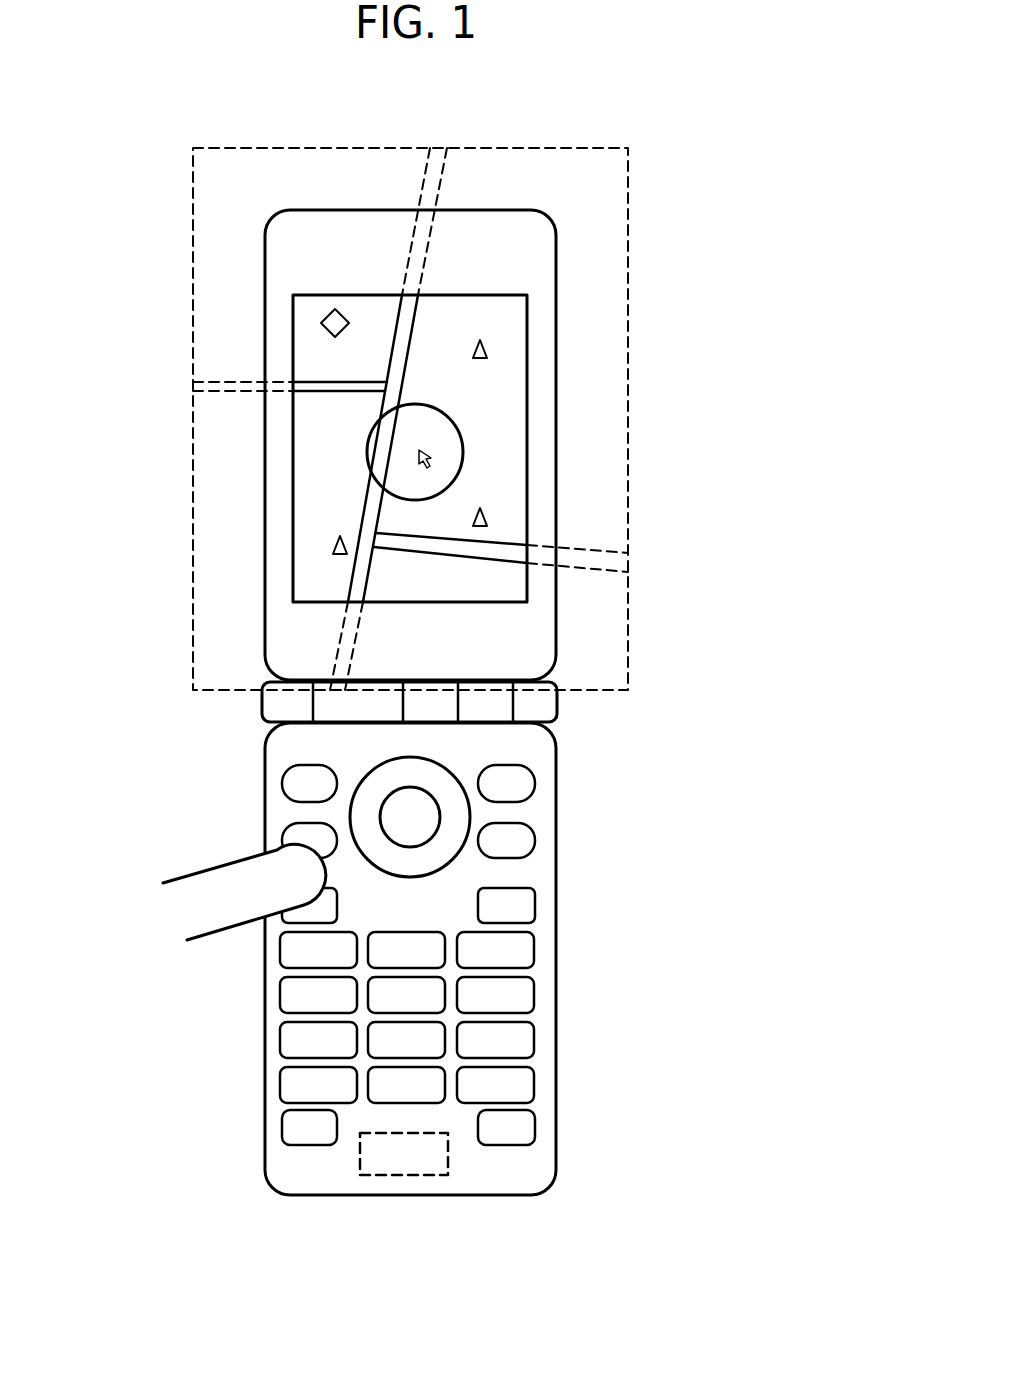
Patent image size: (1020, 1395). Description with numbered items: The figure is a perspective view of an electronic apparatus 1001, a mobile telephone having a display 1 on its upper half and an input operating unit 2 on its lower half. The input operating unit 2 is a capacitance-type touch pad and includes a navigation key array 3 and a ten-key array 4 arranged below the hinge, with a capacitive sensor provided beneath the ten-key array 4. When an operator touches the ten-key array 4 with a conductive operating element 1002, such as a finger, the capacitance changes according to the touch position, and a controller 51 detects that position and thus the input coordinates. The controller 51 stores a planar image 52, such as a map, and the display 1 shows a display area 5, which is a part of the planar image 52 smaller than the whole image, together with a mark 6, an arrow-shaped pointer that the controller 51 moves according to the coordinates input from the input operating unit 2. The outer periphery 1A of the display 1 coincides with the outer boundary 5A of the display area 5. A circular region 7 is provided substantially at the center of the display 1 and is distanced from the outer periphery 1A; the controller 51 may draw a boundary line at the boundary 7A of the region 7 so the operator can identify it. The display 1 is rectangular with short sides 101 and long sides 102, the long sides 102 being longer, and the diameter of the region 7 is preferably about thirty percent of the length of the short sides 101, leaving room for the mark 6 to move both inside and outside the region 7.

The display 1 is at (467, 302).
The outer periphery 1A is at (528, 338).
The input operating unit 2 is at (474, 949).
The navigation key array 3 is at (573, 754).
The ten-key array 4 is at (447, 1015).
The display area 5 is at (510, 418).
The outer boundary 5A is at (528, 379).
The mark 6 is at (432, 457).
The region 7 is at (438, 477).
The boundary 7A is at (362, 447).
The controller 51 is at (428, 1157).
The planar image 52 is at (190, 290).
The short sides 101 is at (343, 294).
The long sides 102 is at (292, 522).
The electronic apparatus 1001 is at (683, 190).
The operating element 1002 is at (198, 917).